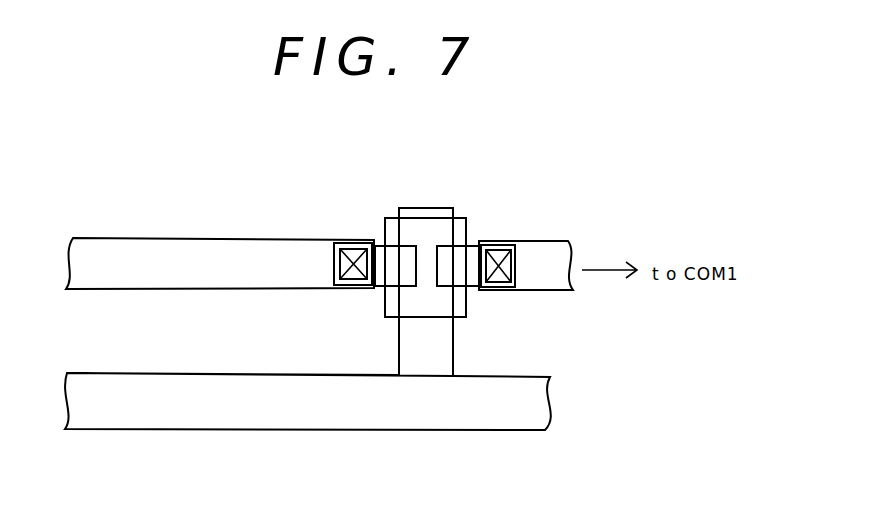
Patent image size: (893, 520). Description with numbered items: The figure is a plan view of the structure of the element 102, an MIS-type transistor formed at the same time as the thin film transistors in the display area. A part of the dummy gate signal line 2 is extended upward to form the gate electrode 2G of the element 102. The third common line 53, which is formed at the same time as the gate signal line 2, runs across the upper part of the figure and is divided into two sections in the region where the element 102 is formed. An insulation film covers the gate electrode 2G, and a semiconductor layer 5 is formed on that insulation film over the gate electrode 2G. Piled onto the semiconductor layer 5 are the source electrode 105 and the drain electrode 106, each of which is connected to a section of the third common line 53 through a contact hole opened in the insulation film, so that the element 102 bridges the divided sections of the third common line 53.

The third common line 53 is at (240, 246).
The semiconductor layer 5 is at (467, 228).
The element 102 is at (430, 206).
The gate electrode 2G is at (400, 332).
The source electrode 105 is at (379, 251).
The drain electrode 106 is at (473, 282).
The gate signal line 2 is at (518, 426).